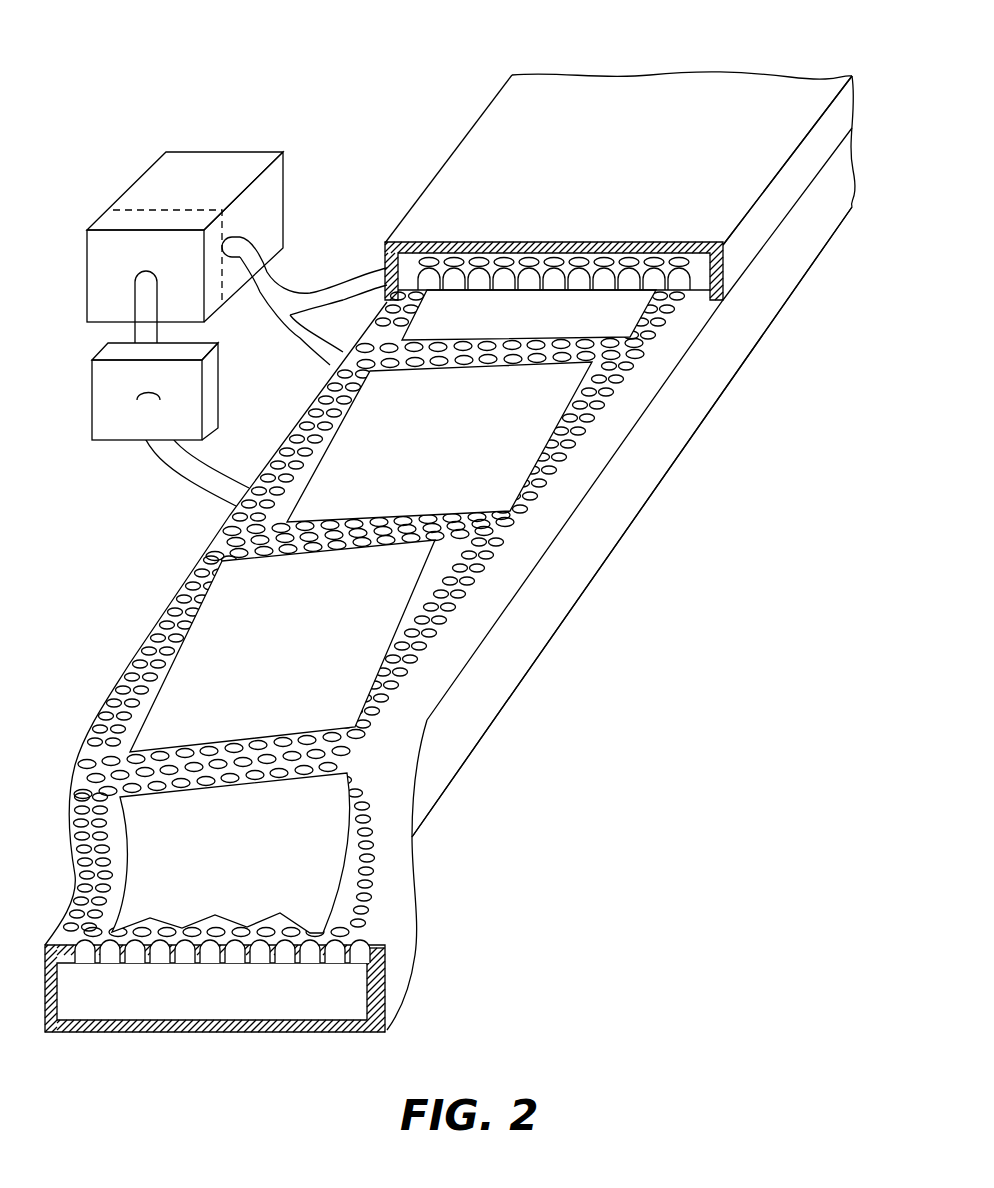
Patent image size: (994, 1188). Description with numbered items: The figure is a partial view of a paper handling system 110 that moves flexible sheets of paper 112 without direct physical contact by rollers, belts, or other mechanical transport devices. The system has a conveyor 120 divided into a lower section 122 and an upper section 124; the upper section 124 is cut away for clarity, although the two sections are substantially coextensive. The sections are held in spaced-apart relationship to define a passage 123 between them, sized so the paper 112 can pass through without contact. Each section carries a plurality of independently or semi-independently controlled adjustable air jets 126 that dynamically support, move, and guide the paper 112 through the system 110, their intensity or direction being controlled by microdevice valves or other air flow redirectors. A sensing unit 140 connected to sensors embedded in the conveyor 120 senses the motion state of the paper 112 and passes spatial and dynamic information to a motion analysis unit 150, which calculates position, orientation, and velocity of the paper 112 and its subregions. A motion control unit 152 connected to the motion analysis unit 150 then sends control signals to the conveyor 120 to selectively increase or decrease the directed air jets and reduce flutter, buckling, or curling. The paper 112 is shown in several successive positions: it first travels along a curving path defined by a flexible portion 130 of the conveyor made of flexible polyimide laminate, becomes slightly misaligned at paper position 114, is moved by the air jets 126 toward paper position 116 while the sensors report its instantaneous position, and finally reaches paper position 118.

The paper handling system 110 is at (160, 47).
The paper 112 is at (192, 670).
The paper position 114 is at (255, 598).
The paper position 116 is at (373, 423).
The paper position 118 is at (488, 308).
The conveyor 120 is at (627, 454).
The lower section 122 is at (498, 673).
The passage 123 is at (700, 297).
The upper section 124 is at (768, 207).
The air jets 126 is at (358, 753).
The flexible portion 130 is at (400, 850).
The sensing unit 140 is at (105, 420).
The motion analysis unit 150 is at (207, 242).
The motion control unit 152 is at (207, 178).